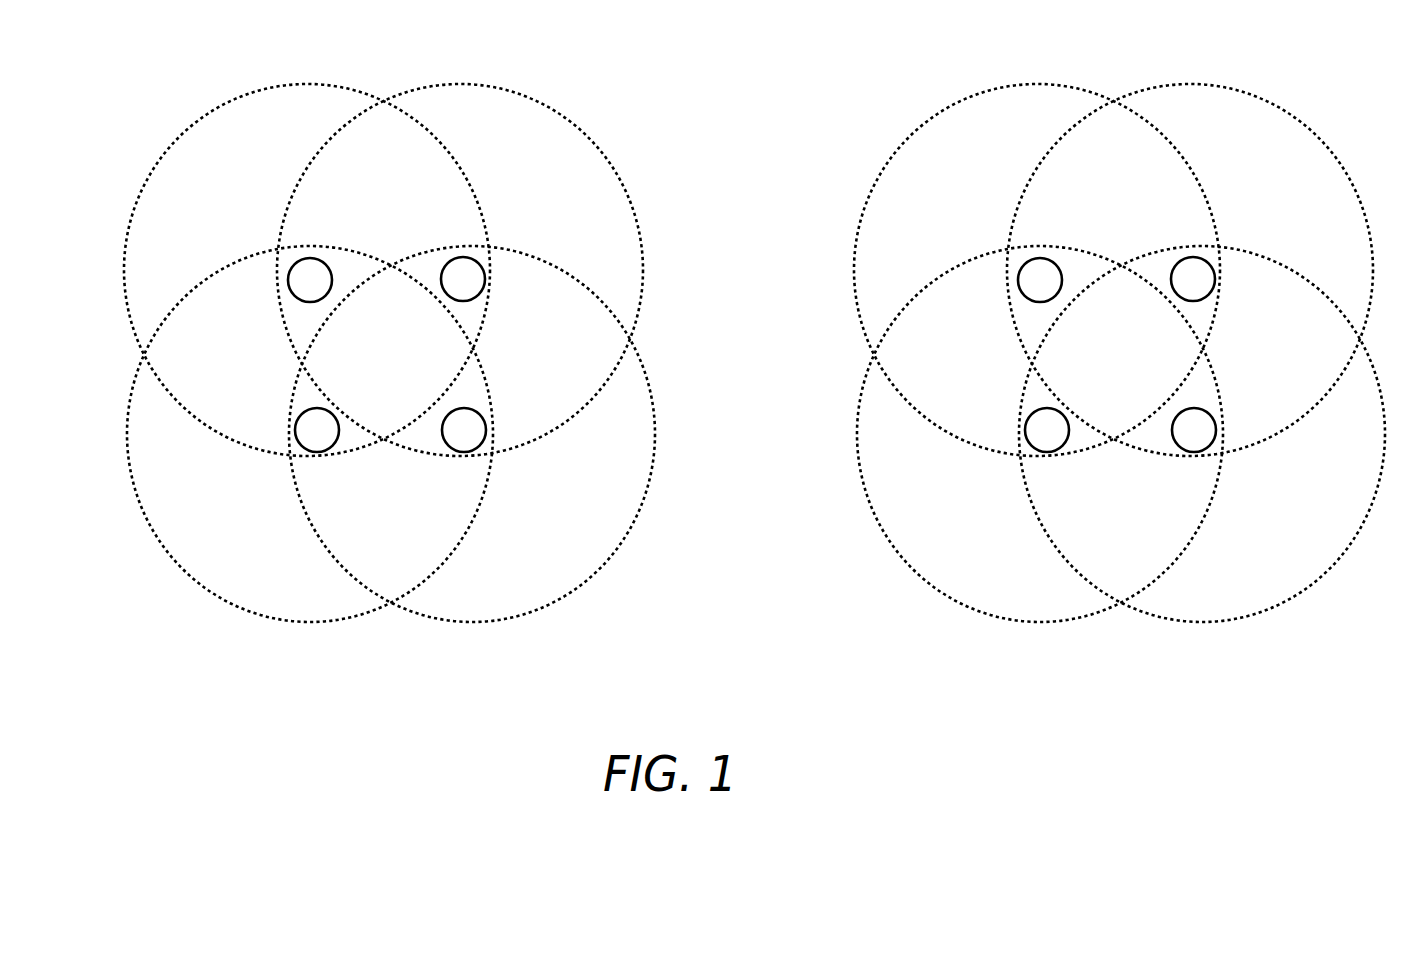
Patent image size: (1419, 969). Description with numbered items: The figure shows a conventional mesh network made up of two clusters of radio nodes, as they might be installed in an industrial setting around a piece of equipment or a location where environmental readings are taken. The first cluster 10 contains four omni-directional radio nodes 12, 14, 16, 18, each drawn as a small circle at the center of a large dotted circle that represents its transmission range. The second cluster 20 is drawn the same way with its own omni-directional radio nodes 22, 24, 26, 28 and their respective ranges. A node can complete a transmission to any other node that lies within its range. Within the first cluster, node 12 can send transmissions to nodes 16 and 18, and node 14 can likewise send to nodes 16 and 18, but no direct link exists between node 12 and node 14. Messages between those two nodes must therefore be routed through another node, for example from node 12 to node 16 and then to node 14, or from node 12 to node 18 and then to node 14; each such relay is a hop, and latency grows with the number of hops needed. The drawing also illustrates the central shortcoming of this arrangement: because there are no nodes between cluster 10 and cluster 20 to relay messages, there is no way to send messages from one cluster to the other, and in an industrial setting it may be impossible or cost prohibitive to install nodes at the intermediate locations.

The cluster 10 is at (393, 415).
The omni-directional radio node 12 is at (659, 167).
The omni-directional radio node 14 is at (133, 575).
The omni-directional radio node 16 is at (482, 434).
The omni-directional radio node 18 is at (113, 180).
The cluster 20 is at (1123, 419).
The omni-directional radio node 22 is at (1389, 167).
The omni-directional radio node 24 is at (863, 575).
The omni-directional radio node 26 is at (1212, 434).
The omni-directional radio node 28 is at (843, 180).